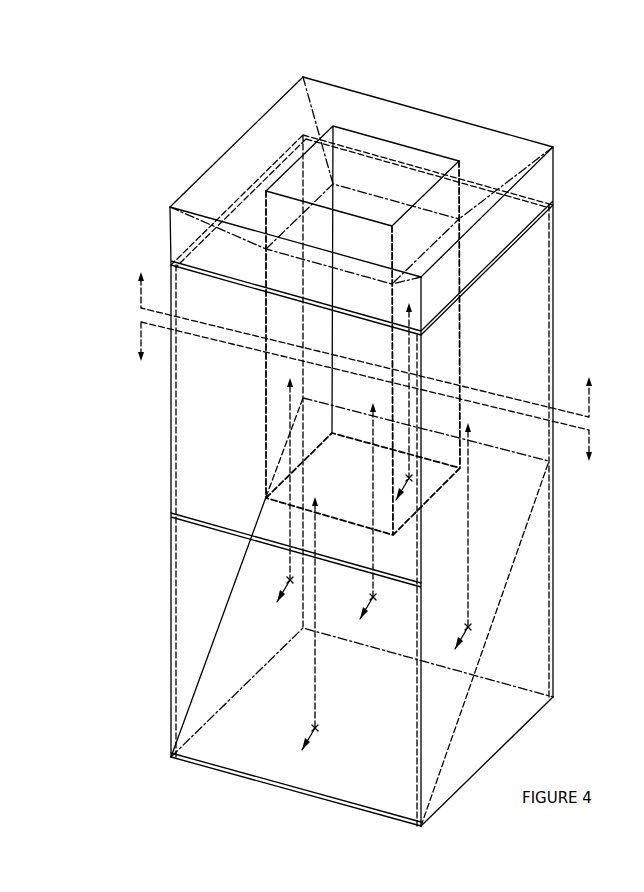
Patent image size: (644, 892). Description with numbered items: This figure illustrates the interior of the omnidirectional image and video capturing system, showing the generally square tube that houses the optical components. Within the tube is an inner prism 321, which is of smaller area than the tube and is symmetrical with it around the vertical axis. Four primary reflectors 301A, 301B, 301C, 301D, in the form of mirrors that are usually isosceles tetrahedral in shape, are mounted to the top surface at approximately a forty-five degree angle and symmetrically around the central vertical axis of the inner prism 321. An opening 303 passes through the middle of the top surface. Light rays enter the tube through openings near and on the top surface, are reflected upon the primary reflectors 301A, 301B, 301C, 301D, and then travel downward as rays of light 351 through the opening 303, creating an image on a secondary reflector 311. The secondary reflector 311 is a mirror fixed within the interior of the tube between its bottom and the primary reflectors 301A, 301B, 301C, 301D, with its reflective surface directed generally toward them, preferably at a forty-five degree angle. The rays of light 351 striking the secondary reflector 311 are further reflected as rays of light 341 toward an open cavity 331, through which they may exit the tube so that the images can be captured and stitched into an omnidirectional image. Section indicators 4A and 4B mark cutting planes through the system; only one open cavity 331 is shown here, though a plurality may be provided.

The primary reflector 301A is at (476, 214).
The primary reflector 301B is at (427, 128).
The primary reflector 301C is at (242, 160).
The primary reflector 301D is at (288, 250).
The opening 303 is at (360, 173).
The secondary reflector 311 is at (243, 742).
The inner prism 321 is at (278, 412).
The open cavity 331 is at (213, 580).
The reflected rays of light 341 is at (472, 618).
The rays of light 351 is at (468, 518).
The section line 4A is at (139, 287).
The section line 4B is at (139, 323).